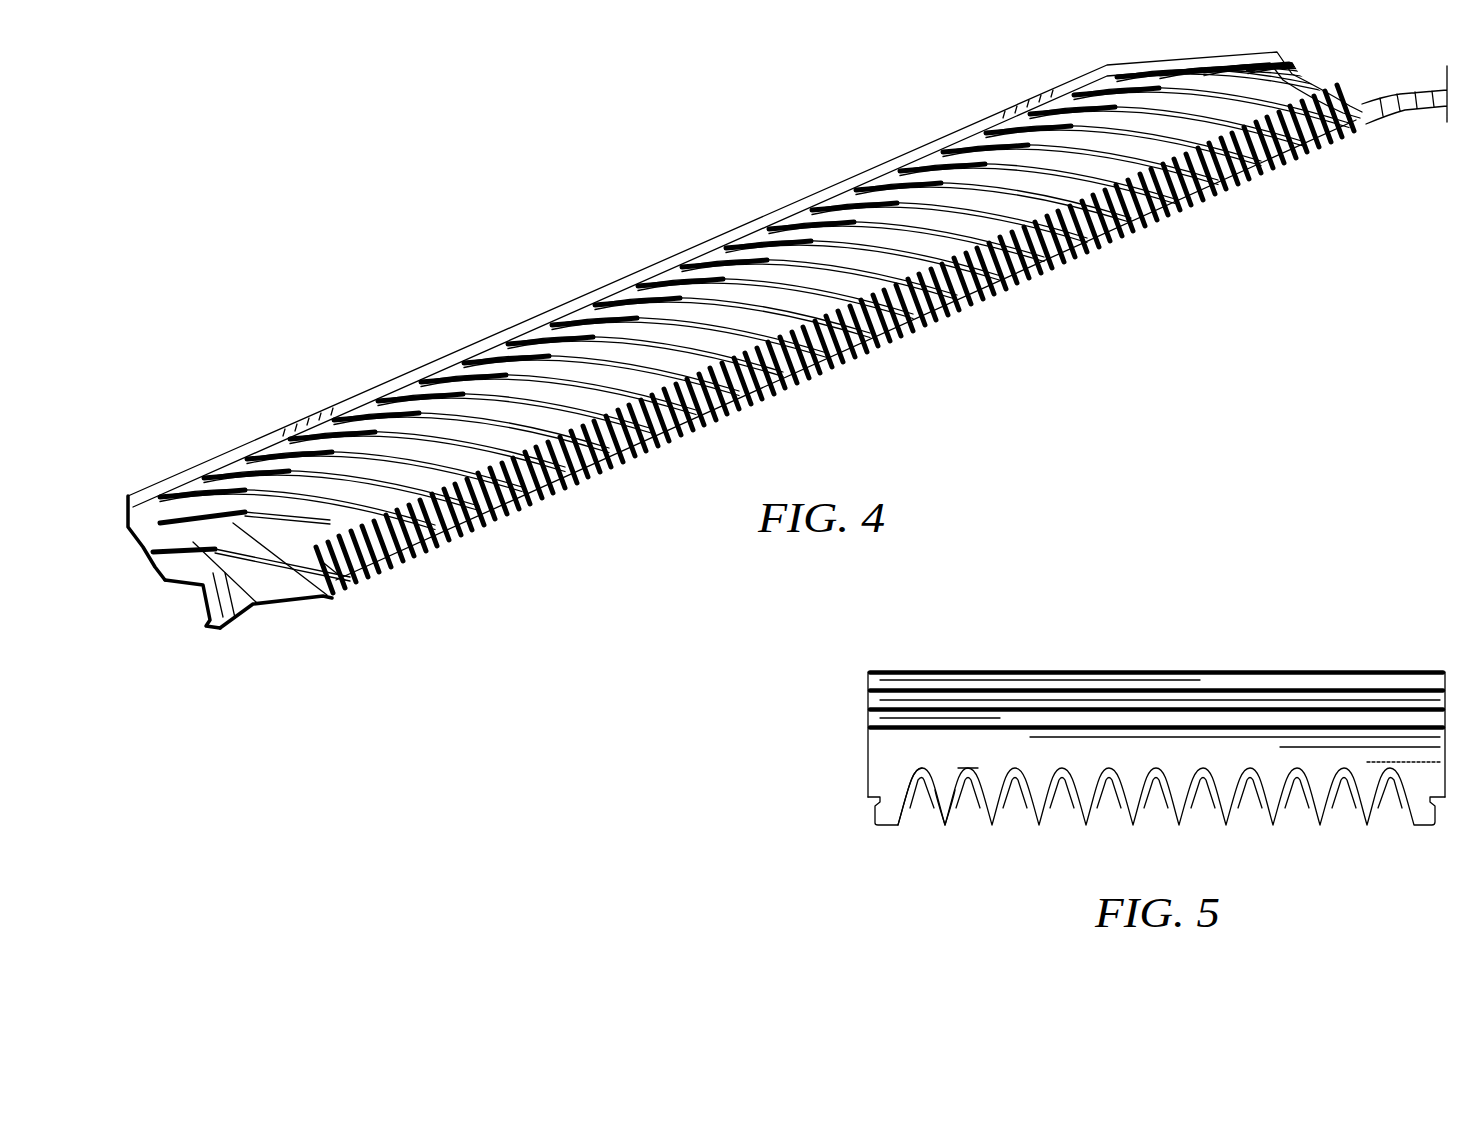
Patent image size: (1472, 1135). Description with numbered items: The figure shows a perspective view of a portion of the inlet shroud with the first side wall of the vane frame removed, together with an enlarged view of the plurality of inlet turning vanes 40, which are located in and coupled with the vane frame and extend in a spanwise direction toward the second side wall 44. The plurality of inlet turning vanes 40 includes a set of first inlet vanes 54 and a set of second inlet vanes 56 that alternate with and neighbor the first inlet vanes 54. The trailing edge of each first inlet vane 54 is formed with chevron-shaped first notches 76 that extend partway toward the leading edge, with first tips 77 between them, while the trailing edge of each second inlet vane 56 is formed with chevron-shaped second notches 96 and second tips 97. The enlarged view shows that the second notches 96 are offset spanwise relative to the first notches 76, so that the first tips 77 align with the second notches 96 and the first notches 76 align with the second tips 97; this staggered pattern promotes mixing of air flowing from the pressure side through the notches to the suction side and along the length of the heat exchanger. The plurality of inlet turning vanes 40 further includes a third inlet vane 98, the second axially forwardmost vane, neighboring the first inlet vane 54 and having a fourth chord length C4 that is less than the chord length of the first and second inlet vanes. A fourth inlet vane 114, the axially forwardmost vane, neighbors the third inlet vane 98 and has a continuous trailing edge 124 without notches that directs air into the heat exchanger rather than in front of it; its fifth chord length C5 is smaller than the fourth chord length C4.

In FIG. 4, the plurality of inlet turning vanes 40 is at (176, 158).
In FIG. 4, the second side wall 44 is at (157, 570).
In FIG. 4, the first inlet vane 54 is at (177, 494).
In FIG. 5, the first inlet vane 54 is at (846, 780).
In FIG. 4, the second inlet vane 56 is at (227, 477).
In FIG. 5, the second inlet vane 56 is at (854, 720).
In FIG. 5, the first notches 76 is at (913, 810).
In FIG. 5, the first tips 77 is at (945, 833).
In FIG. 5, the second notches 96 is at (990, 785).
In FIG. 5, the second tips 97 is at (970, 820).
In FIG. 4, the third inlet vane 98 is at (157, 520).
In FIG. 4, the fourth inlet vane 114 is at (126, 532).
In FIG. 4, the trailing edge 124 is at (267, 626).
In FIG. 4, the fifth chord length C5 is at (303, 597).
In FIG. 4, the fourth chord length C4 is at (340, 581).